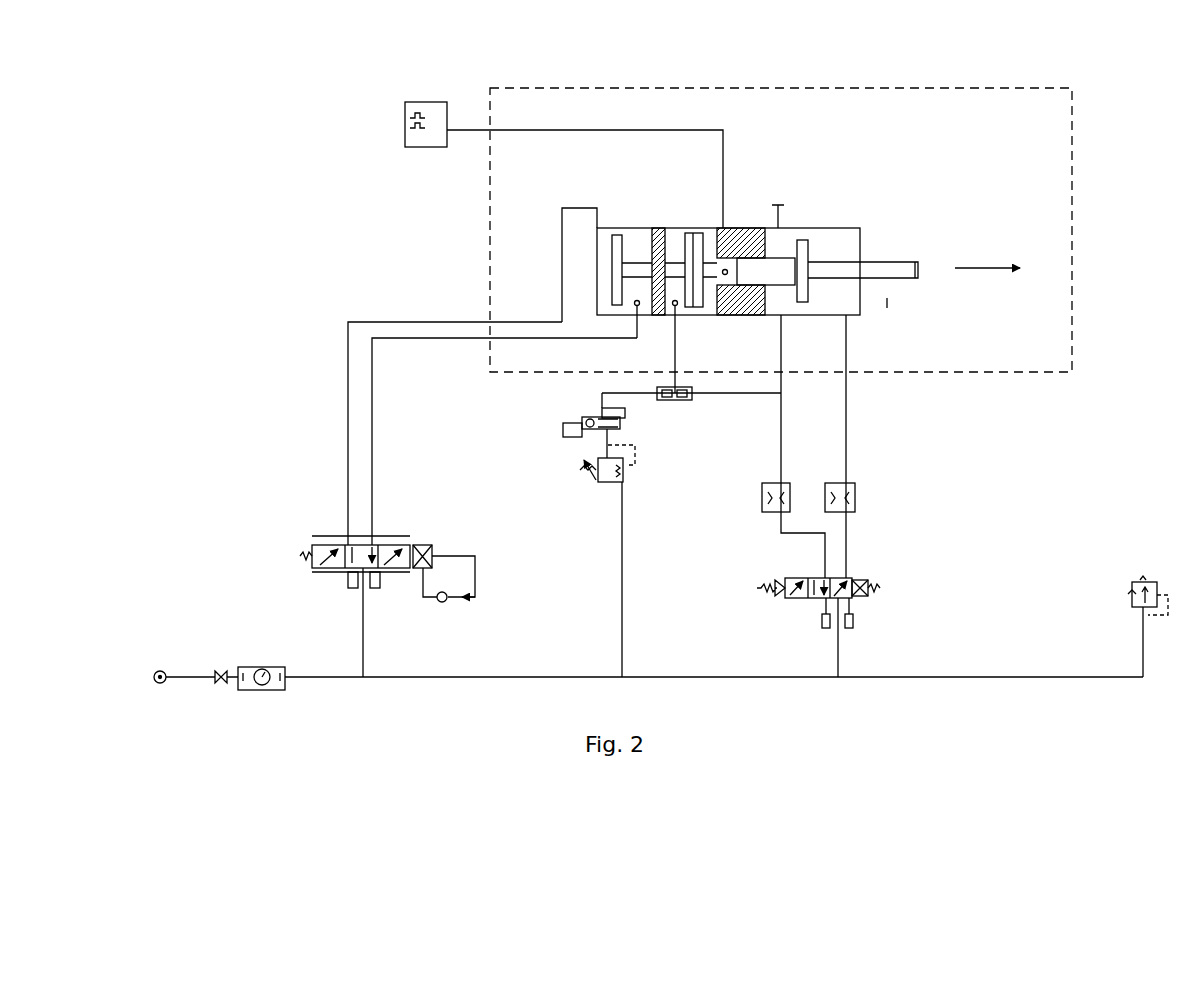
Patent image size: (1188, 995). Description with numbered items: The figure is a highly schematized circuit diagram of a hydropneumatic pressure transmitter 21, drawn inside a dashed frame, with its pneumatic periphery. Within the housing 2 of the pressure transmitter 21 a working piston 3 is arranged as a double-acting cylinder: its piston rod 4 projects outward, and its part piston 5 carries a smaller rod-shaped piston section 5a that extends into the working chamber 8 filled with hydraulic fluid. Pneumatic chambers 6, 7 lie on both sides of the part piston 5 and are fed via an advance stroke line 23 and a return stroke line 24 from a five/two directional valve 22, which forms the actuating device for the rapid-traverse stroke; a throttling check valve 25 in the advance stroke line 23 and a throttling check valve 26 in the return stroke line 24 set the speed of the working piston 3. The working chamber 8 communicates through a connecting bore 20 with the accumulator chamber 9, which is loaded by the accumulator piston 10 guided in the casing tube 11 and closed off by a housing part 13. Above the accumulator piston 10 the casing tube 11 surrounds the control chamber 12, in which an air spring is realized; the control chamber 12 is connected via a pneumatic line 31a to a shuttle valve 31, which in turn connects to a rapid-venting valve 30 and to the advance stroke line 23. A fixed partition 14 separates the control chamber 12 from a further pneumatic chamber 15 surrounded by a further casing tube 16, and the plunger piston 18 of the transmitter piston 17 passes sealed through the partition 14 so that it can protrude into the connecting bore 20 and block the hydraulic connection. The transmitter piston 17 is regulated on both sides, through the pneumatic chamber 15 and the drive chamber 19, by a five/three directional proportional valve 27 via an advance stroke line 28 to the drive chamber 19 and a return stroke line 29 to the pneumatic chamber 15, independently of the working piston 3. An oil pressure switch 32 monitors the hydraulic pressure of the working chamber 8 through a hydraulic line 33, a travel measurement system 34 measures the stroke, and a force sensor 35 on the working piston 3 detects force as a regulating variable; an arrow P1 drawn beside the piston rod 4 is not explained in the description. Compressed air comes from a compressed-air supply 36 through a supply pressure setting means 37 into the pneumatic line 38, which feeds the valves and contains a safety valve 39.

The housing 2 is at (833, 228).
The working piston 3 is at (840, 256).
The piston rod 4 is at (910, 264).
The part piston 5 is at (805, 236).
The piston section 5a is at (762, 316).
The pneumatic chamber 6 is at (770, 228).
The pneumatic chamber 7 is at (858, 303).
The working chamber 8 is at (748, 228).
The accumulator chamber 9 is at (713, 228).
The accumulator piston 10 is at (683, 228).
The casing tube 11 is at (618, 170).
The control chamber 12 is at (678, 228).
The housing part 13 is at (740, 316).
The partition 14 is at (662, 318).
The pneumatic chamber 15 is at (626, 228).
The further casing tube 16 is at (637, 222).
The transmitter piston 17 is at (613, 302).
The plunger piston 18 is at (672, 228).
The drive chamber 19 is at (597, 252).
The connecting bore 20 is at (709, 316).
The pressure transmitter 21 is at (858, 118).
The 5/2 directional valve 22 is at (866, 568).
The advance stroke line 23 is at (780, 354).
The return stroke line 24 is at (849, 398).
The throttling check valve 25 is at (768, 483).
The throttling check valve 26 is at (850, 483).
The 5/3 directional proportional valve 27 is at (412, 530).
The advance stroke line 28 is at (378, 320).
The return stroke line 29 is at (412, 340).
The rapid-venting valve 30 is at (632, 485).
The shuttle valve 31 is at (685, 408).
The pneumatic line 31a is at (668, 372).
The oil pressure switch 32 is at (418, 98).
The hydraulic line 33 is at (460, 130).
The travel measurement system 34 is at (889, 303).
The force sensor 35 is at (922, 268).
The compressed-air supply 36 is at (170, 664).
The supply pressure setting means 37 is at (262, 664).
The pneumatic line 38 is at (318, 677).
The safety valve 39 is at (1130, 572).
The force direction P1 is at (995, 262).